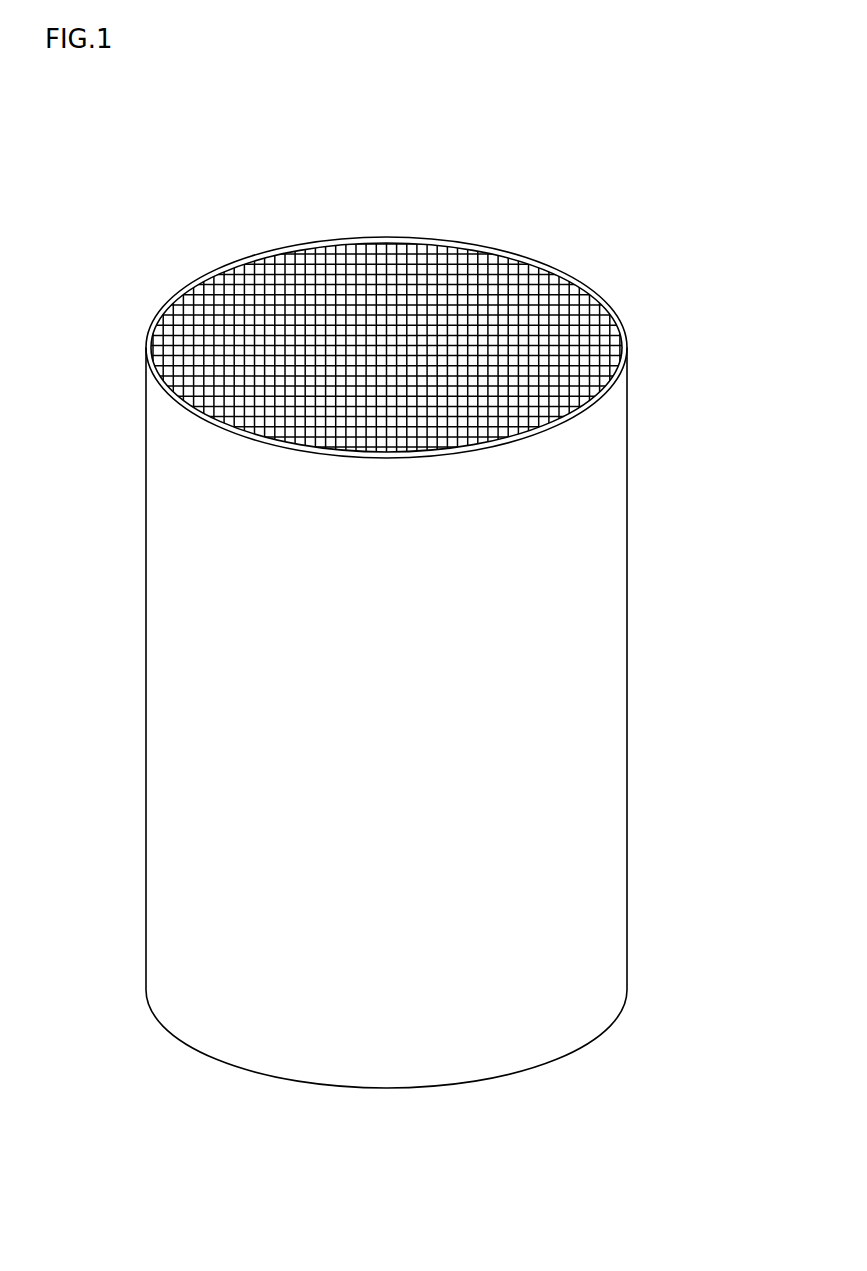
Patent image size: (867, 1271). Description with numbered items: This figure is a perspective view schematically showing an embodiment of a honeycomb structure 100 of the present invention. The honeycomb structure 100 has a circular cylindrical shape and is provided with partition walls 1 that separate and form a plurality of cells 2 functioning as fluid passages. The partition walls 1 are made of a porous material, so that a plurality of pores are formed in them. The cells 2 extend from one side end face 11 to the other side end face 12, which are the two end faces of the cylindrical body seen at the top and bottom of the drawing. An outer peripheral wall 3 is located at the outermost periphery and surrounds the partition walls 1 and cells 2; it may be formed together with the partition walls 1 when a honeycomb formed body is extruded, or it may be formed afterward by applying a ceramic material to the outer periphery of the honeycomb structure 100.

The honeycomb structure 100 is at (663, 133).
The partition wall 1 is at (447, 285).
The cell 2 is at (558, 340).
The outer peripheral wall 3 is at (593, 557).
The one side end face 11 is at (168, 284).
The the other side end face 12 is at (173, 1045).